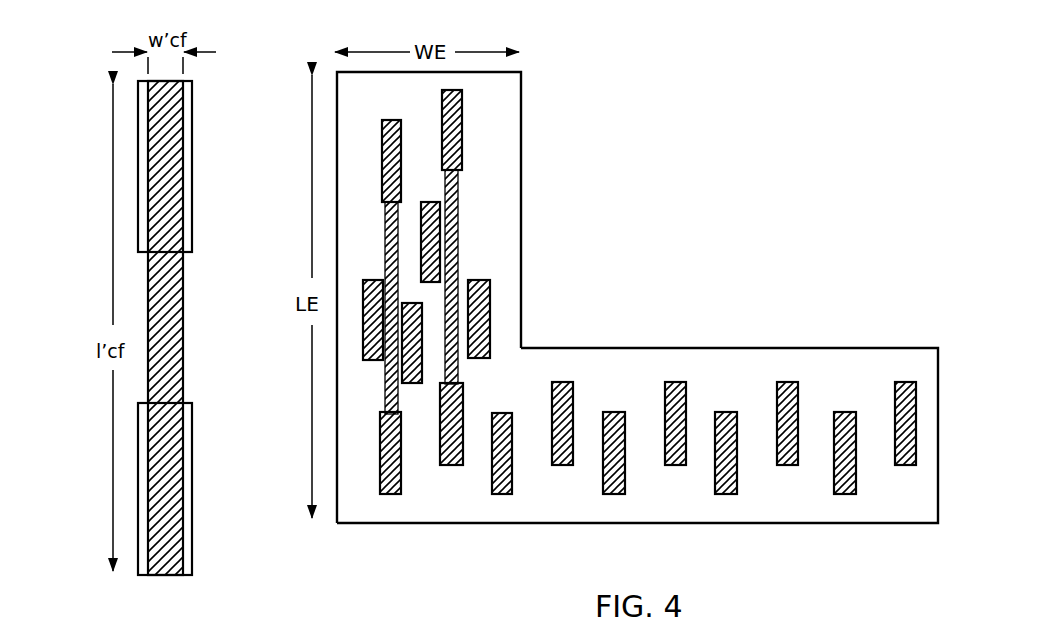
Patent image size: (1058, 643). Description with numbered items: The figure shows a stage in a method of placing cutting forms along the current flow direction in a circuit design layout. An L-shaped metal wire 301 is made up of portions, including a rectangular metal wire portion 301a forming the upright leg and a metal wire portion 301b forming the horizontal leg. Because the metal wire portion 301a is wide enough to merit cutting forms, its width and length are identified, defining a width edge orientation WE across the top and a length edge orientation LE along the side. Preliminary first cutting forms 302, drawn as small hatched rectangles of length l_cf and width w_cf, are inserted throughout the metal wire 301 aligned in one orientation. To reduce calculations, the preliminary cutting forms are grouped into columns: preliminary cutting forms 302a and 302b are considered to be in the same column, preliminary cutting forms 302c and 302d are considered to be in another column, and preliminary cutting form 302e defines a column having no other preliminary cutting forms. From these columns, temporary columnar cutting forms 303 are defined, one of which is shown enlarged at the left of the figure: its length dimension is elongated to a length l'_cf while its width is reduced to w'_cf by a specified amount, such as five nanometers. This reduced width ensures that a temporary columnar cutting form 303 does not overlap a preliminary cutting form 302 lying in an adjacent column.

The metal wire 301 is at (637, 294).
The metal wire portion 301a is at (520, 165).
The metal wire portion 301b is at (700, 349).
The preliminary first cutting form 302 is at (191, 96).
The preliminary cutting form 302a is at (383, 138).
The preliminary cutting form 302b is at (383, 452).
The preliminary cutting form 302c is at (462, 128).
The preliminary cutting form 302d is at (460, 445).
The preliminary cutting form 302e is at (412, 383).
The temporary columnar cutting form 303 is at (184, 273).